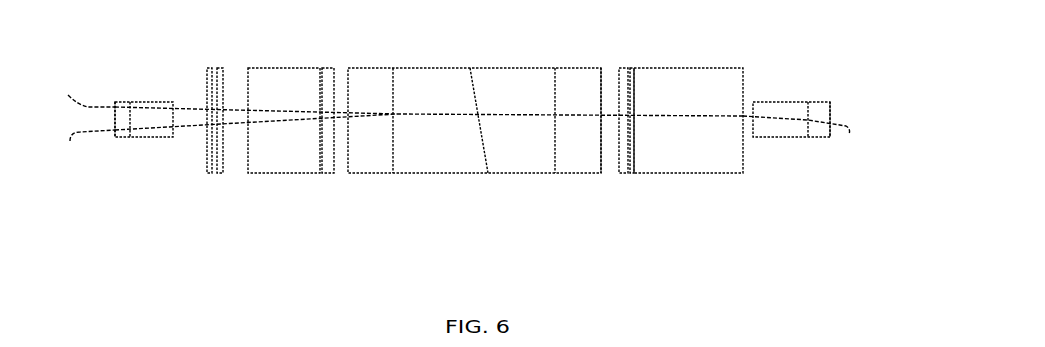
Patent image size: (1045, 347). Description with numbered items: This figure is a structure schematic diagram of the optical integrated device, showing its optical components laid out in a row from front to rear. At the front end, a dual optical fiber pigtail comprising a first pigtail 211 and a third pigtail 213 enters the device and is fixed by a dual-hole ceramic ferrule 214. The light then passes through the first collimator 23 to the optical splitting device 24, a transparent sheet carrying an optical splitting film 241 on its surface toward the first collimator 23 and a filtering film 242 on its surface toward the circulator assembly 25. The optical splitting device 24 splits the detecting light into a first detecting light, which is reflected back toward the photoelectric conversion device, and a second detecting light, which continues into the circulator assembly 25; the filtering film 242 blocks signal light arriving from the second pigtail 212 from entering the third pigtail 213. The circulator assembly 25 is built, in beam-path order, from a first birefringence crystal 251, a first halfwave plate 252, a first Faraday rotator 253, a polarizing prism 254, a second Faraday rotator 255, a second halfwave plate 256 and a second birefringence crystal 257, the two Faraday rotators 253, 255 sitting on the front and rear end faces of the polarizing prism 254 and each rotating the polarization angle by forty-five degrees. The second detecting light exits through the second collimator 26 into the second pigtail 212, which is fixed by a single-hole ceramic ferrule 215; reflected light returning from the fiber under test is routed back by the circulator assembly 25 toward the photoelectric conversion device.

The first pigtail 211 is at (83, 100).
The second pigtail 212 is at (848, 124).
The third pigtail 213 is at (84, 140).
The dual-hole ceramic ferrule 214 is at (130, 138).
The single-hole ceramic ferrule 215 is at (820, 138).
The first collimator 23 is at (174, 138).
The optical splitting device 24 is at (220, 129).
The optical splitting film 241 is at (208, 175).
The filtering film 242 is at (222, 175).
The circulator assembly 25 is at (495, 124).
The first birefringence crystal 251 is at (268, 175).
The first halfwave plate 252 is at (328, 175).
The first Faraday rotator 253 is at (370, 175).
The polarizing prism 254 is at (482, 175).
The second Faraday rotator 255 is at (583, 175).
The second halfwave plate 256 is at (628, 175).
The second birefringence crystal 257 is at (700, 175).
The second collimator 26 is at (786, 138).